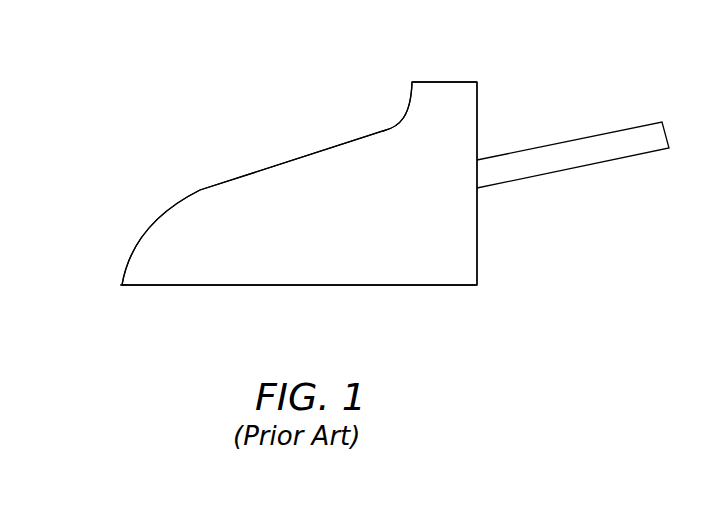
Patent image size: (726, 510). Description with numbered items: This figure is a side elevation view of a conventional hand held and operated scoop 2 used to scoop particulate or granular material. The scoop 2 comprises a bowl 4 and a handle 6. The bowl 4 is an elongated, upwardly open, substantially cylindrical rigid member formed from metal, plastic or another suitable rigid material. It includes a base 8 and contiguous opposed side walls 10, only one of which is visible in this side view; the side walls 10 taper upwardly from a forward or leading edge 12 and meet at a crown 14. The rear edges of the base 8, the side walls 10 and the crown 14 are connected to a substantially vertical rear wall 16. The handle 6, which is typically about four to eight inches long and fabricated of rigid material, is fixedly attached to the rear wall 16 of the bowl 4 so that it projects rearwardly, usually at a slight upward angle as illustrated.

The scoop 2 is at (237, 139).
The bowl 4 is at (151, 218).
The handle 6 is at (617, 127).
The base 8 is at (295, 287).
The side walls 10 is at (380, 150).
The forward or leading edge 12 is at (118, 285).
The crown 14 is at (438, 82).
The rear wall 16 is at (477, 266).